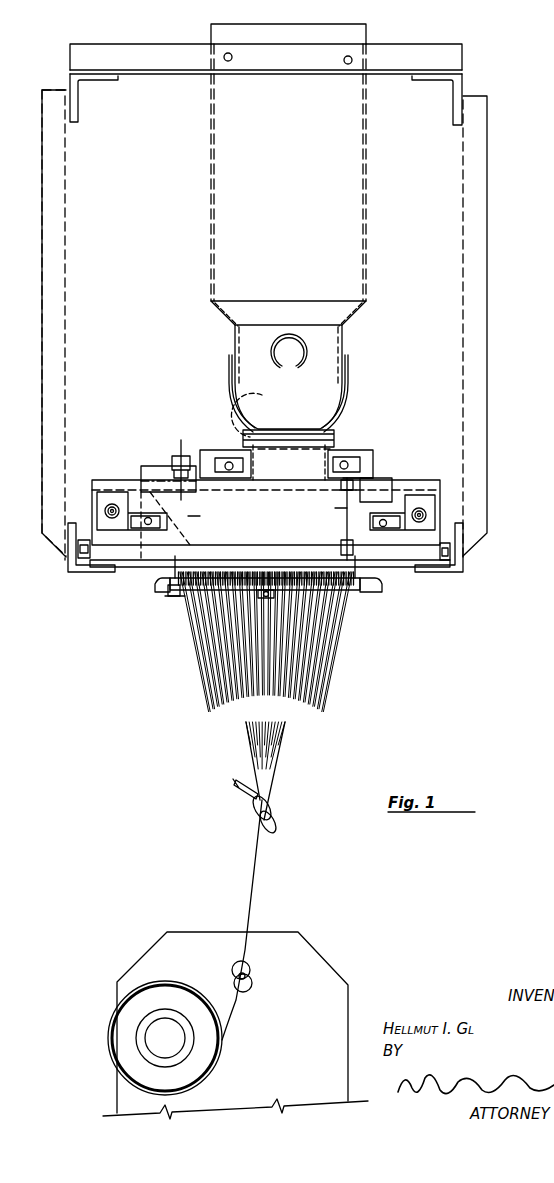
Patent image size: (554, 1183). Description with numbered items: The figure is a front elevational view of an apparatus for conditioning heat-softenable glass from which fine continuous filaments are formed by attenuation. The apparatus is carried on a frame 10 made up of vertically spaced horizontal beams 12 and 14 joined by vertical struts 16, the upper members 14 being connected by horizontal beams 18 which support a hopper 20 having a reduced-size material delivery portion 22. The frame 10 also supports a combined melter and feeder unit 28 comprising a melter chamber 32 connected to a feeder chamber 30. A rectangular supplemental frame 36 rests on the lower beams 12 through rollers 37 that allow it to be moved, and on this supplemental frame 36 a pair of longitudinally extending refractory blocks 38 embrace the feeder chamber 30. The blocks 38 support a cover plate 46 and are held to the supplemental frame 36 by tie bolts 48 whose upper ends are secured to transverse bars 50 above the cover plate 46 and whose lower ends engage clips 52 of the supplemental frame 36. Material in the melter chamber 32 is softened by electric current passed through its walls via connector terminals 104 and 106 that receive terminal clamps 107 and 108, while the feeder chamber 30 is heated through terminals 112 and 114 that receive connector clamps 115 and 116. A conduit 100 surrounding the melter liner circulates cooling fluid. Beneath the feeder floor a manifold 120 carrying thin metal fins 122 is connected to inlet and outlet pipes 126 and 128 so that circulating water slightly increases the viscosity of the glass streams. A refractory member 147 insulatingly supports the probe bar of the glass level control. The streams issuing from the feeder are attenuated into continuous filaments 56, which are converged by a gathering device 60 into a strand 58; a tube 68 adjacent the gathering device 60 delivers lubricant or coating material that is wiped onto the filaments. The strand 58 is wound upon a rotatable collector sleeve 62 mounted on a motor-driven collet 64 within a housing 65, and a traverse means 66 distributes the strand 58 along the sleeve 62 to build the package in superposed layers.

The frame 10 is at (497, 189).
The lower beams 12 is at (68, 562).
The upper beams 14 is at (70, 77).
The vertical struts 16 is at (42, 103).
The horizontally arranged beams 18 is at (70, 44).
The hopper 20 is at (368, 214).
The material delivery portion 22 is at (344, 341).
The melter and feeder unit 28 is at (372, 446).
The feeder chamber 30 is at (372, 560).
The melter chamber 32 is at (238, 408).
The supplemental frame 36 is at (105, 566).
The rollers 37 is at (84, 540).
The blocks 38 is at (282, 526).
The cover plate 46 is at (357, 491).
The tie bolts 48 is at (190, 518).
The transverse bars 50 is at (352, 480).
The clips 52 is at (175, 556).
The continuous filaments 56 is at (232, 667).
The strand 58 is at (262, 857).
The gathering device 60 is at (258, 827).
The collector sleeve 62 is at (126, 1020).
The collet 64 is at (126, 1054).
The housing 65 is at (340, 977).
The traverse means 66 is at (252, 962).
The tube 68 is at (236, 793).
The conduit 100 is at (332, 434).
The connector terminal 104 is at (350, 450).
The connector terminal 106 is at (229, 458).
The terminal clamp 107 is at (365, 470).
The terminal clamp 108 is at (181, 450).
The terminal 112 is at (392, 492).
The terminal 114 is at (165, 480).
The connector clamp 115 is at (432, 496).
The connector clamp 116 is at (106, 492).
The manifold 120 is at (172, 590).
The fins 122 is at (182, 594).
The inlet pipe 126 is at (372, 590).
The outlet pipe 128 is at (163, 585).
The support member 147 is at (172, 462).